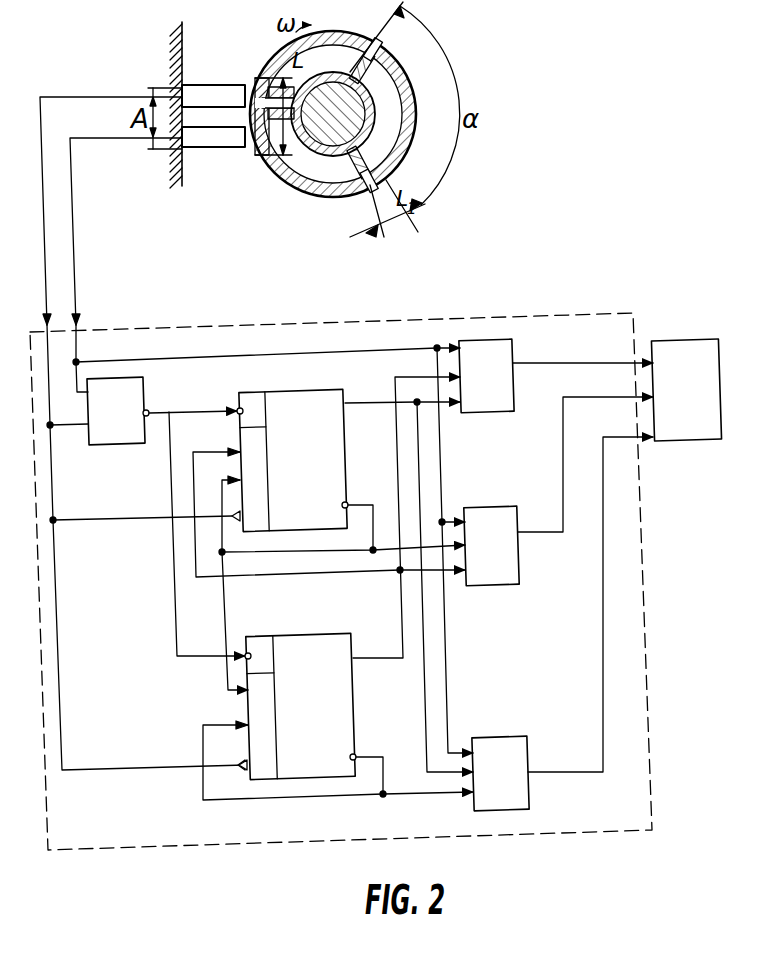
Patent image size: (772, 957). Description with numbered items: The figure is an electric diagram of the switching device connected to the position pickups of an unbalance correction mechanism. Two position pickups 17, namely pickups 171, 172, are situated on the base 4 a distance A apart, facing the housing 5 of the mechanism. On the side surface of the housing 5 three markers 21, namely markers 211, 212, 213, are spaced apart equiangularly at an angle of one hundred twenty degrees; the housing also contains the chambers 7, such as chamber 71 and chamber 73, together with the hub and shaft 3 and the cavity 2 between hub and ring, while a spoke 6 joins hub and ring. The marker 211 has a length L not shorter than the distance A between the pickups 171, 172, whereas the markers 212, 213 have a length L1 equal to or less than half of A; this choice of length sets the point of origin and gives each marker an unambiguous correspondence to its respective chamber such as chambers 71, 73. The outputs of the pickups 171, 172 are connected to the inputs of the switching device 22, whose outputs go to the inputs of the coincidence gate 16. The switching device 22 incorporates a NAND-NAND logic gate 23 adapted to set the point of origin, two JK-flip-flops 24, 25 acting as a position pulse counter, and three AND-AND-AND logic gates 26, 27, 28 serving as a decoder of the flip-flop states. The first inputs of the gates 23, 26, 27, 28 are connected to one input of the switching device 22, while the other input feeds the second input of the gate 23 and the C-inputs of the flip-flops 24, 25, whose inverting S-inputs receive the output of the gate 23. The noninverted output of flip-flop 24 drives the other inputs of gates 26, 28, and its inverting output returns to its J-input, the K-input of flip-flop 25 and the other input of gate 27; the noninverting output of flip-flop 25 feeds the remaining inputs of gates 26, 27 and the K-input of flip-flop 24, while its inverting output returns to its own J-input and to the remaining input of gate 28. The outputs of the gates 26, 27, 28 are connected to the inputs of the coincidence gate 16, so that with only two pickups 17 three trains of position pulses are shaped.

The chamber between hub and ring 2 is at (352, 52).
The shaft 3 is at (328, 96).
The base 4 is at (170, 29).
The housing 5 is at (346, 123).
The spoke 6 is at (393, 62).
The chamber 7 is at (349, 138).
The chamber 71 is at (406, 107).
The chamber 73 is at (323, 188).
The coincidence gate 16 is at (686, 390).
The position pickup 17 is at (213, 121).
The position pickup 171 is at (214, 143).
The position pickup 172 is at (200, 93).
The marker 21 is at (346, 123).
The marker 211 is at (258, 150).
The marker 212 is at (382, 42).
The marker 213 is at (372, 195).
The switching device 22 is at (550, 310).
The NAND-NAND logic gate 23 is at (136, 392).
The JK-flip-flop 24 is at (305, 404).
The JK-flip-flop 25 is at (313, 650).
The AND-AND-AND logic gate 26 is at (490, 350).
The AND-AND-AND logic gate 27 is at (500, 516).
The AND-AND-AND logic gate 28 is at (507, 752).